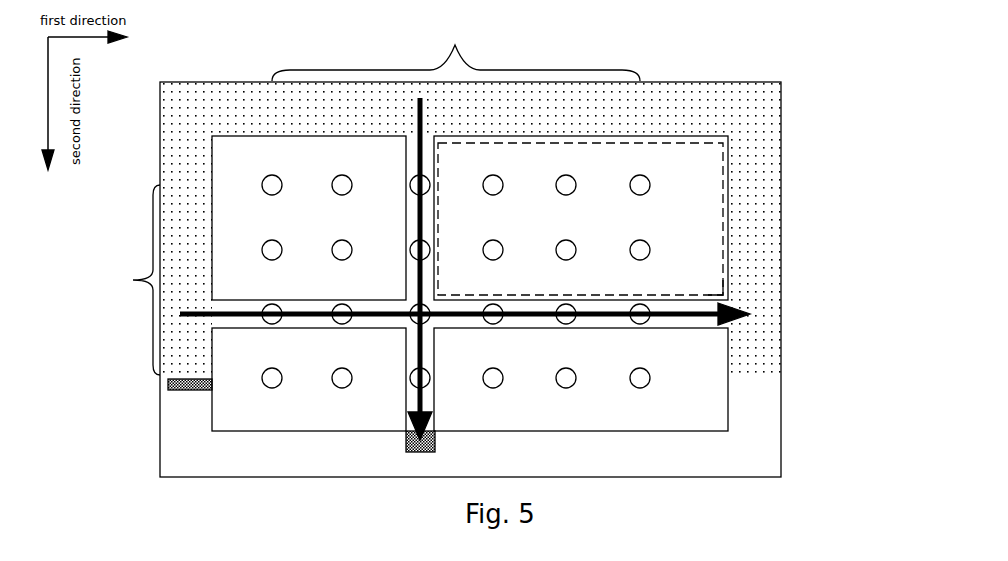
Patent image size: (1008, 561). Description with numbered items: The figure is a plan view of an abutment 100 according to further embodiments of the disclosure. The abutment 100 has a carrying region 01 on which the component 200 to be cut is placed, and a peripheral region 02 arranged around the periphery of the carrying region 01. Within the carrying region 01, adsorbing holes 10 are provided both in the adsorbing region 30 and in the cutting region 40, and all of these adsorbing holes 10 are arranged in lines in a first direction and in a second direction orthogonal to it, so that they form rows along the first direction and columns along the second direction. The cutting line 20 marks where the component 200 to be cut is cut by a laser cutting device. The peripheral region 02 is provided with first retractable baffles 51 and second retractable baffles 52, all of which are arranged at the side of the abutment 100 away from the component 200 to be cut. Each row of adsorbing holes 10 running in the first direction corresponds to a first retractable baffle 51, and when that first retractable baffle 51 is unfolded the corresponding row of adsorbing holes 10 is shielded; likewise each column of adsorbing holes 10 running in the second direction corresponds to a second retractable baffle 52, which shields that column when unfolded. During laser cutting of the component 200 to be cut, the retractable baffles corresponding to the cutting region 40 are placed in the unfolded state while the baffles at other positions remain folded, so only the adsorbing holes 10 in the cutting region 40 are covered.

The abutment 100 is at (780, 95).
The component to be cut 200 is at (731, 175).
The adsorbing hole 10 is at (648, 250).
The cutting line 20 is at (700, 327).
The adsorbing region 30 is at (727, 281).
The cutting region 40 is at (737, 306).
The carrying region 01 is at (225, 160).
The peripheral region 02 is at (195, 125).
The first retractable baffle 51 is at (131, 280).
The second retractable baffle 52 is at (456, 52).